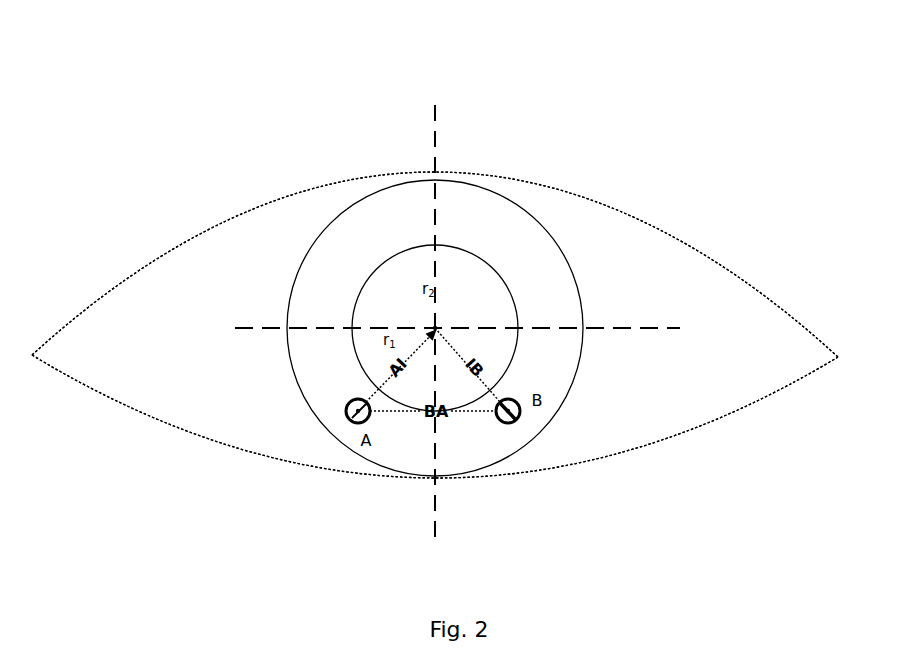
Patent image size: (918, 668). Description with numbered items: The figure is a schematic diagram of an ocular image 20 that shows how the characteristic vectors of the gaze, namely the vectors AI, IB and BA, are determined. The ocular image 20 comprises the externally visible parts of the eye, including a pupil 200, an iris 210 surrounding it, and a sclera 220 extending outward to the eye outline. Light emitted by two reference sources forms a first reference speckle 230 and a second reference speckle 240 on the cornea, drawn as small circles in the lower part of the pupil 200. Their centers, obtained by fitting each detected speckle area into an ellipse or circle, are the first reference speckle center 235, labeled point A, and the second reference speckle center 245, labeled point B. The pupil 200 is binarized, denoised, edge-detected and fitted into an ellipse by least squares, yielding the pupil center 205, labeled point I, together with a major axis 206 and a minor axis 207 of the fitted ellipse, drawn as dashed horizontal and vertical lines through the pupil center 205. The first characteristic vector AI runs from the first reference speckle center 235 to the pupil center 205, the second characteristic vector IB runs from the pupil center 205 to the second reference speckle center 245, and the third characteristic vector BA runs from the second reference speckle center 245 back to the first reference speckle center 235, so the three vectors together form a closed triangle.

The ocular image 20 is at (418, 86).
The pupil 200 is at (468, 277).
The pupil center 205 is at (442, 326).
The major axis 206 is at (489, 328).
The minor axis 207 is at (438, 280).
The iris 210 is at (333, 307).
The sclera 220 is at (187, 312).
The first reference speckle 230 is at (341, 421).
The first reference speckle center 235 is at (350, 411).
The second reference speckle 240 is at (506, 428).
The second reference speckle center 245 is at (514, 417).